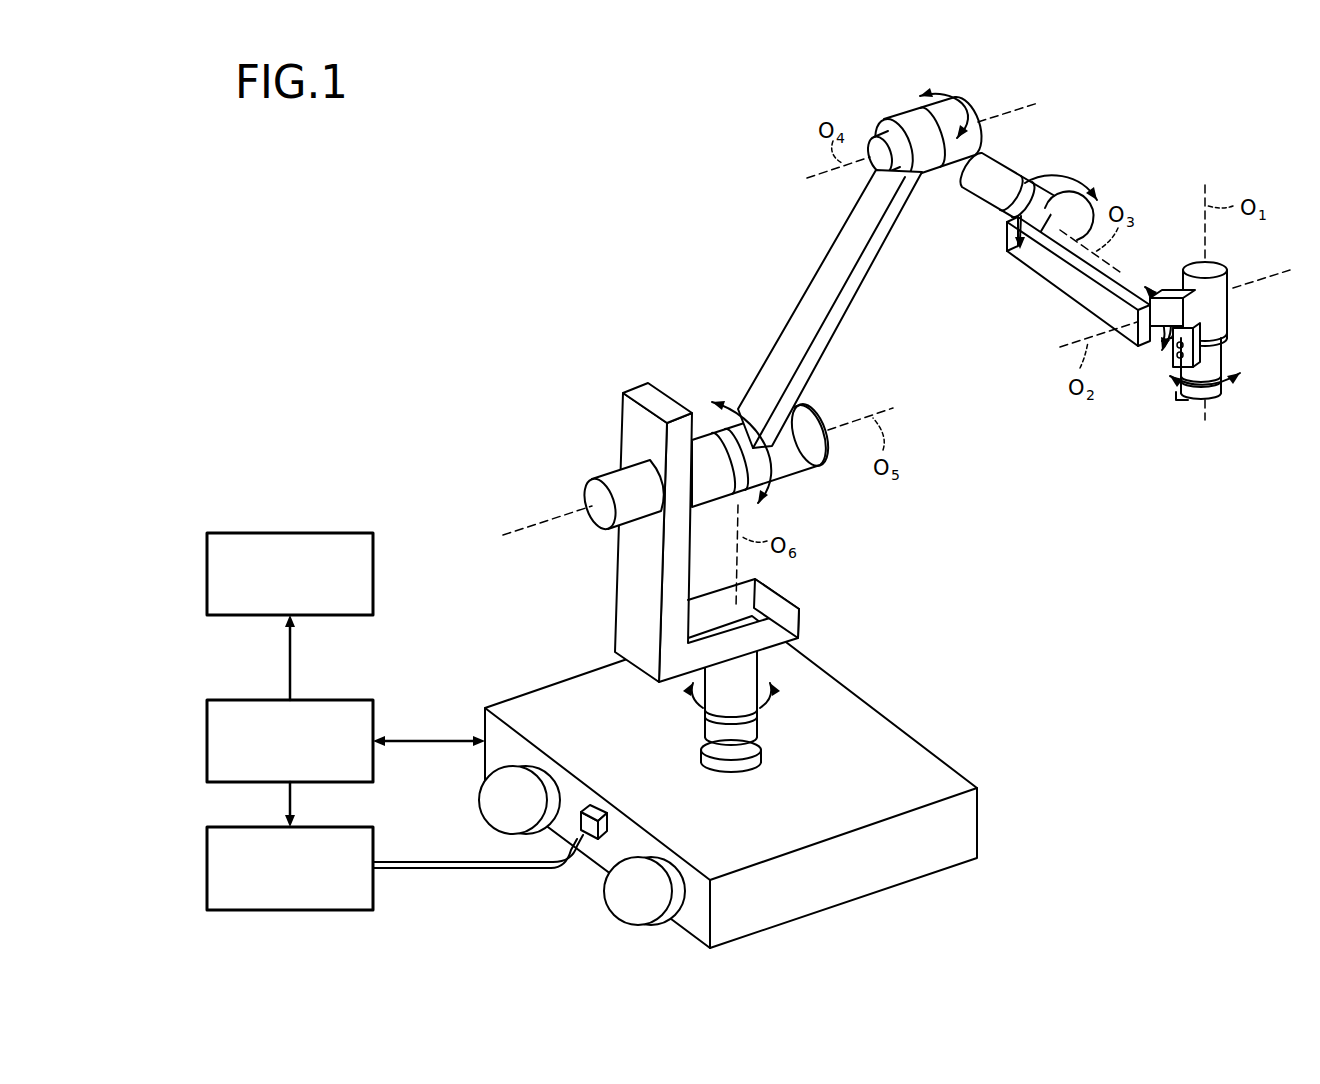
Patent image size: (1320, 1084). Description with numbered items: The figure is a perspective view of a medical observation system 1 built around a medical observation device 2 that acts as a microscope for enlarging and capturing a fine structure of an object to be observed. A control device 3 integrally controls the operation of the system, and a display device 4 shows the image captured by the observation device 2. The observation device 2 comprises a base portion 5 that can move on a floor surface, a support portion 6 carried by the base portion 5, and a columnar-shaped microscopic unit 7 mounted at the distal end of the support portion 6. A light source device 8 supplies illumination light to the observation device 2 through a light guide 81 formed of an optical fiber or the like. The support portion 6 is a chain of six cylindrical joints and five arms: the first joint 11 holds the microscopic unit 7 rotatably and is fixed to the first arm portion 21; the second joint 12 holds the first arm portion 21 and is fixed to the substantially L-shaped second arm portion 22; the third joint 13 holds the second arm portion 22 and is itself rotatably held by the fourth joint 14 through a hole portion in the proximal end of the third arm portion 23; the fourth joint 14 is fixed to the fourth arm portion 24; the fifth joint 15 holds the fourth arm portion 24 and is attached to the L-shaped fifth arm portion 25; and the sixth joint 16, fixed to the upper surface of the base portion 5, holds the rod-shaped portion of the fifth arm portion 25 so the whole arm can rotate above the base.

The medical observation system 1 is at (527, 162).
The medical observation device 2 is at (875, 498).
The control device 3 is at (333, 673).
The display device 4 is at (333, 506).
The base portion 5 is at (957, 831).
The support portion 6 is at (992, 276).
The microscopic unit 7 is at (1229, 334).
The light source device 8 is at (333, 808).
The first joint 11 is at (1197, 270).
The second joint 12 is at (1156, 325).
The third joint 13 is at (997, 210).
The fourth joint 14 is at (923, 118).
The fifth joint 15 is at (621, 480).
The sixth joint 16 is at (747, 727).
The first arm portion 21 is at (1170, 297).
The second arm portion 22 is at (1068, 287).
The third arm portion 23 is at (992, 187).
The fourth arm portion 24 is at (842, 255).
The fifth arm portion 25 is at (633, 600).
The light guide 81 is at (418, 861).